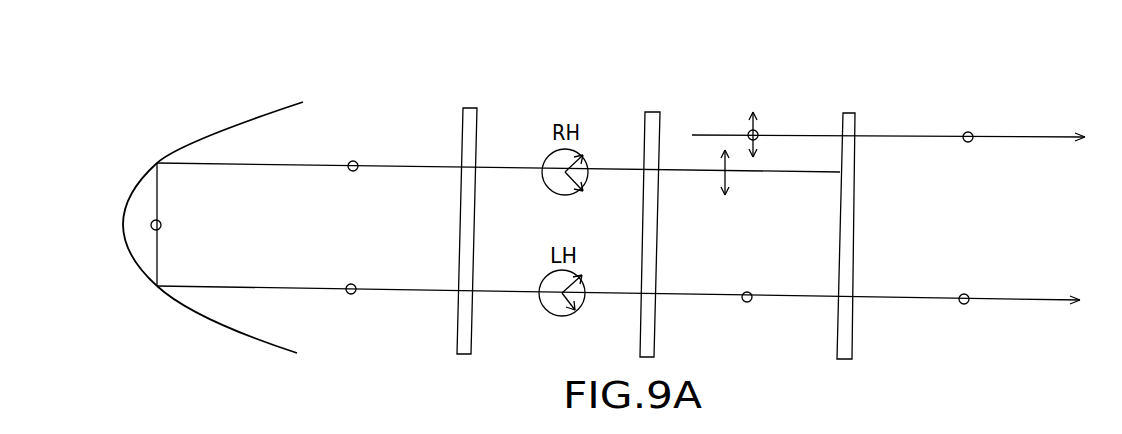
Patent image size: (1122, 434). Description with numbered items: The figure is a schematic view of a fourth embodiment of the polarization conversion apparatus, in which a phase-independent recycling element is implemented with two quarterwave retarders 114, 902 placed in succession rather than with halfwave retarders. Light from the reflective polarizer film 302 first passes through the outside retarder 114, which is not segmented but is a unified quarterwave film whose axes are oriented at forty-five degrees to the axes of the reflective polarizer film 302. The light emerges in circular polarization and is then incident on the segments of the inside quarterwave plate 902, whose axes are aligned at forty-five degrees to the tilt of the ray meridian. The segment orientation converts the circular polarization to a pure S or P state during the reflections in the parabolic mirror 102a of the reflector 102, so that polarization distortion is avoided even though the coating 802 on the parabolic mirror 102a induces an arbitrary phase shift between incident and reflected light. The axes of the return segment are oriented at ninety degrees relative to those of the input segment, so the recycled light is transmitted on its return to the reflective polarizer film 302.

The parabolic mirror 102 is at (201, 200).
The parabolic mirror 102a is at (172, 154).
The coating 802 is at (247, 123).
The inside quarterwave plate 902 is at (468, 106).
The outside retarder 114 is at (650, 109).
The reflective polarizer film 302 is at (848, 110).